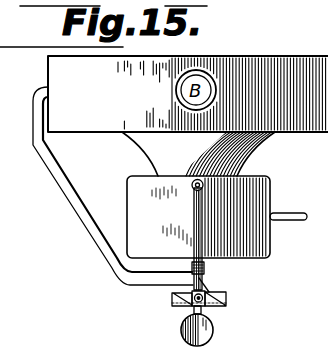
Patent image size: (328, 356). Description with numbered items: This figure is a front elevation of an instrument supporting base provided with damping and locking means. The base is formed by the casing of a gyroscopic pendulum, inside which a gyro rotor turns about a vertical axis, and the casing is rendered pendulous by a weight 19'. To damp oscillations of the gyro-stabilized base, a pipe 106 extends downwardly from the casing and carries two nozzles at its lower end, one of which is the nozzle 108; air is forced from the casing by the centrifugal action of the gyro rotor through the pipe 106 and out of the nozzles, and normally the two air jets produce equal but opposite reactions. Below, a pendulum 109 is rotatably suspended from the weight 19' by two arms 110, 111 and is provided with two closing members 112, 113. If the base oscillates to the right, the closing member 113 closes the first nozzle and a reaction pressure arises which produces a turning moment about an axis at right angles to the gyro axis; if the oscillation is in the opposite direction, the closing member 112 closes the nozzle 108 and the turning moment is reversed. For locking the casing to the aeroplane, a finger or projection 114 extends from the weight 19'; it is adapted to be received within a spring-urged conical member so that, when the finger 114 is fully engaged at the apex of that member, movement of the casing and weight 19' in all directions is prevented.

The pipe 106 is at (74, 199).
The weight 19' is at (198, 217).
The arm 110 is at (194, 240).
The arm 111 is at (192, 267).
The nozzle 108 is at (205, 288).
The closing member 112 is at (225, 299).
The closing member 113 is at (172, 294).
The pendulum 109 is at (210, 334).
The finger 114 is at (281, 213).